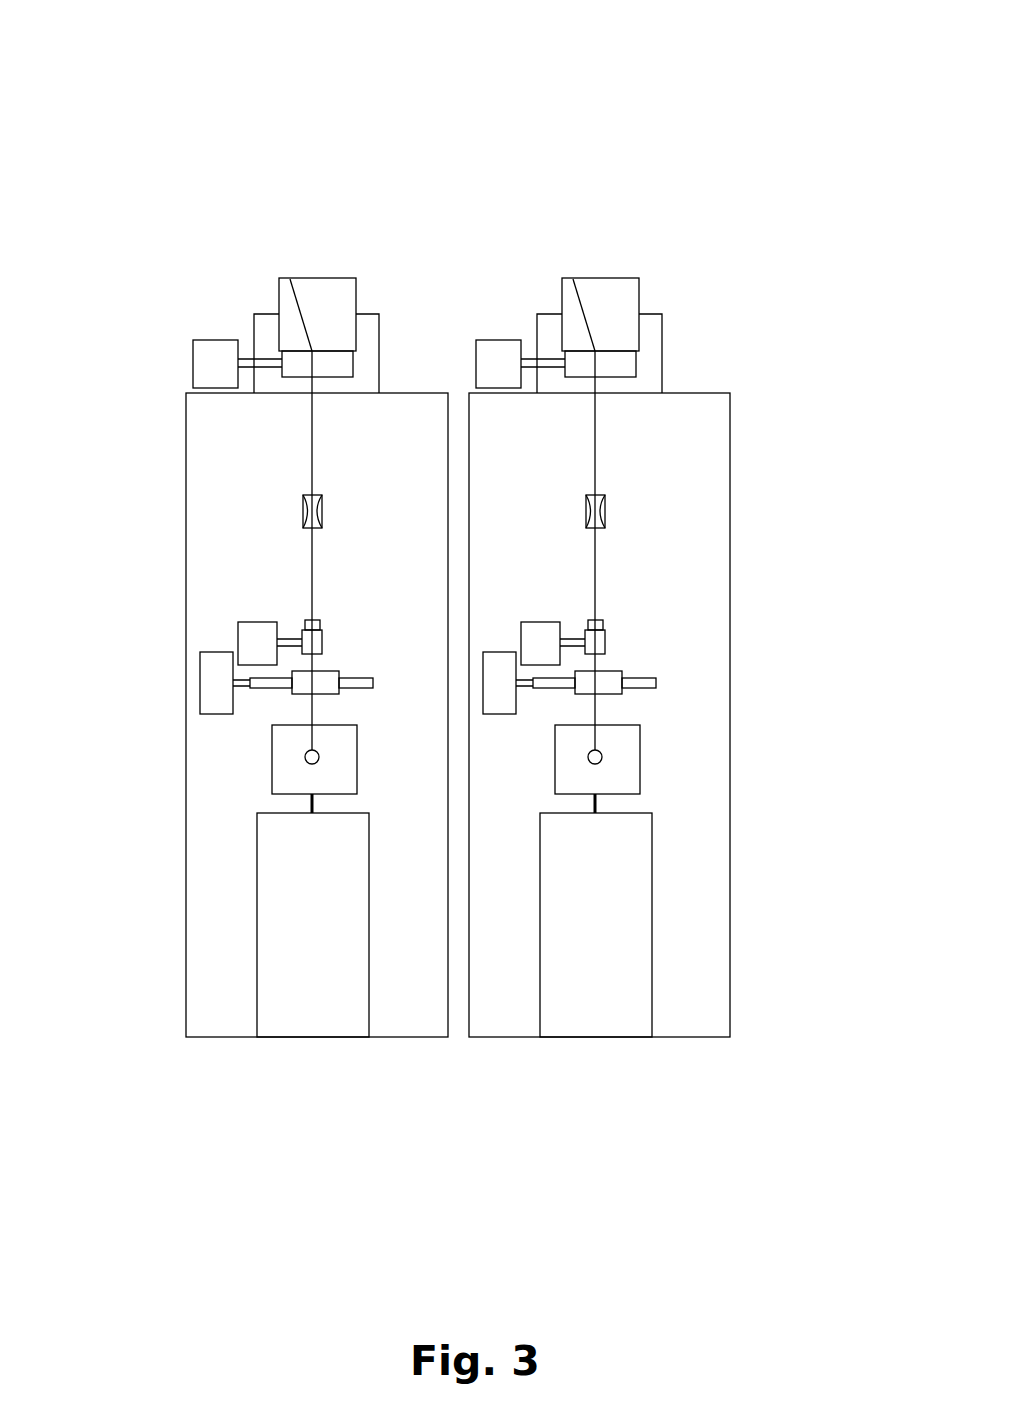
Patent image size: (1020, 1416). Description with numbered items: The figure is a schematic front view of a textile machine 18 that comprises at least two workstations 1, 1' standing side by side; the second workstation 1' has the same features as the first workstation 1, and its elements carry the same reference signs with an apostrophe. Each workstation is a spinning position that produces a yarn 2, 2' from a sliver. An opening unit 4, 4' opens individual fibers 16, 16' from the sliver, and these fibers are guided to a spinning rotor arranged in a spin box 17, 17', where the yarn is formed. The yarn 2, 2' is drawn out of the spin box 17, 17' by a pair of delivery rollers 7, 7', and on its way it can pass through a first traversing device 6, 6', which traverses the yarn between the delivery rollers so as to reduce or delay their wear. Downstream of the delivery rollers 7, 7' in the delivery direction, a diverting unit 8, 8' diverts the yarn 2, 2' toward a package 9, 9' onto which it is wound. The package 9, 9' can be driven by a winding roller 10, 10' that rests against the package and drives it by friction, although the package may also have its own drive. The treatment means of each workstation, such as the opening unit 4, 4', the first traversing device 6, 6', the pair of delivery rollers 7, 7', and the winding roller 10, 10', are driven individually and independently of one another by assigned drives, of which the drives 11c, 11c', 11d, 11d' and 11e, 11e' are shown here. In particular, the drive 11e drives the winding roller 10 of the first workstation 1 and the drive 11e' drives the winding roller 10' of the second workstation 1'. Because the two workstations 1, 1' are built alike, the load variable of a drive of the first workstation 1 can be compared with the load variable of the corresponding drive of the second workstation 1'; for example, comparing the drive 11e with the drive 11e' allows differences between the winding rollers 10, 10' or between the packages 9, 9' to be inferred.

The workstation 1 is at (251, 614).
The second workstation 1' is at (661, 611).
The yarn 2 is at (266, 712).
The yarn 2' is at (658, 715).
The opening unit 4 is at (313, 982).
The opening unit 4' is at (596, 982).
The first traversing device 6 is at (216, 607).
The first traversing device 6' is at (696, 648).
The pair of delivery rollers 7 is at (193, 609).
The pair of delivery rollers 7' is at (721, 609).
The diverting unit 8 is at (190, 495).
The diverting unit 8' is at (716, 485).
The package 9 is at (326, 252).
The package 9' is at (610, 262).
The winding roller 10 is at (354, 310).
The winding roller 10' is at (645, 312).
The drive 11c is at (153, 676).
The drive 11c' is at (674, 599).
The drive 11d is at (179, 631).
The drive 11d' is at (696, 599).
The drive of the winding roller 11e is at (186, 335).
The drive of the winding roller 11e' is at (507, 315).
The individual fibers 16 is at (187, 769).
The individual fibers 16' is at (724, 775).
The spin box 17 is at (216, 730).
The spin box 17' is at (697, 730).
The textile machine 18 is at (733, 162).